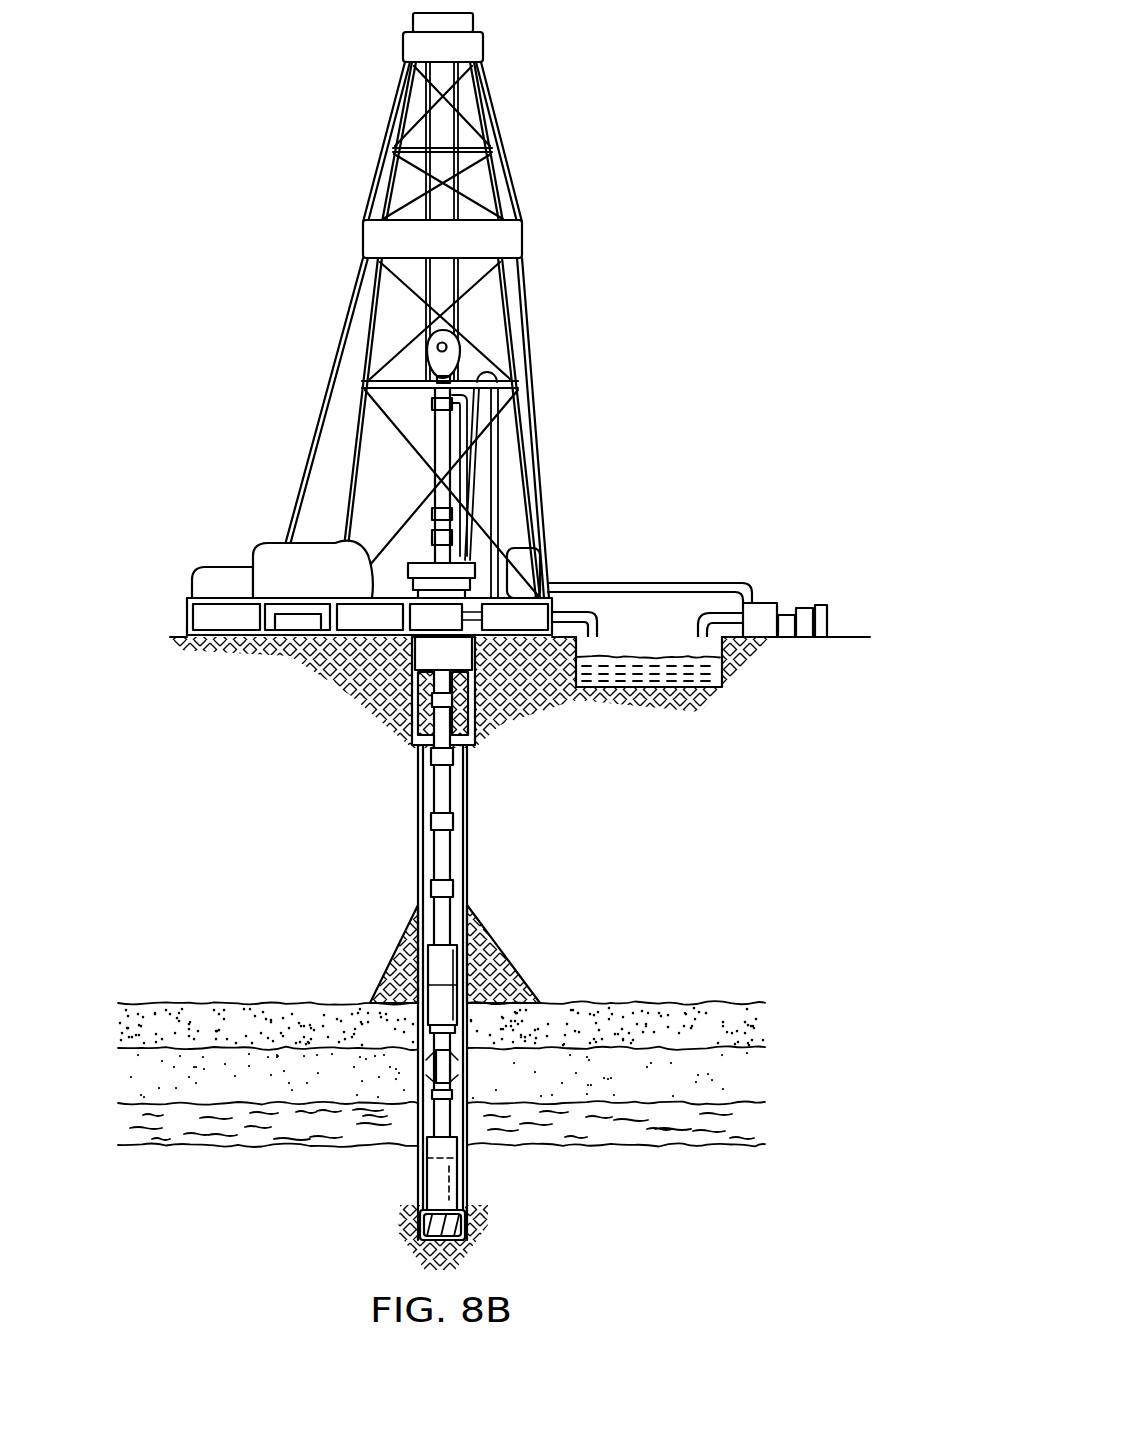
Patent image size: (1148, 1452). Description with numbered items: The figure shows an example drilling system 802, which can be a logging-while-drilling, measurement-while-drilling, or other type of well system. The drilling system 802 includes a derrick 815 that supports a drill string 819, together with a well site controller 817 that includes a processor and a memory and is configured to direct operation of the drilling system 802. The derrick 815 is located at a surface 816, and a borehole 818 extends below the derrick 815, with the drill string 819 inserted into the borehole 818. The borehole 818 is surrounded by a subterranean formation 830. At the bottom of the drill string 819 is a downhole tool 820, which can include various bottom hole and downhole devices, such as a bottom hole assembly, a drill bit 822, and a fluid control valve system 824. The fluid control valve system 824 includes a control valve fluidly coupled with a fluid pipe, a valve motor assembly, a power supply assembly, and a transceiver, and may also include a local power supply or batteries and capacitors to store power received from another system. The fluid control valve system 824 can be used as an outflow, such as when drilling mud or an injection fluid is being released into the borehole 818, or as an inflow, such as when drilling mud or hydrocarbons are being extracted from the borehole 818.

The drilling system 802 is at (222, 121).
The derrick 815 is at (533, 412).
The surface 816 is at (848, 637).
The well site controller 817 is at (297, 637).
The borehole 818 is at (418, 838).
The drill string 819 is at (452, 858).
The downhole tool 820 is at (560, 1128).
The drill bit 822 is at (420, 1218).
The fluid control valve system 824 is at (447, 1150).
The subterranean formation 830 is at (782, 1084).